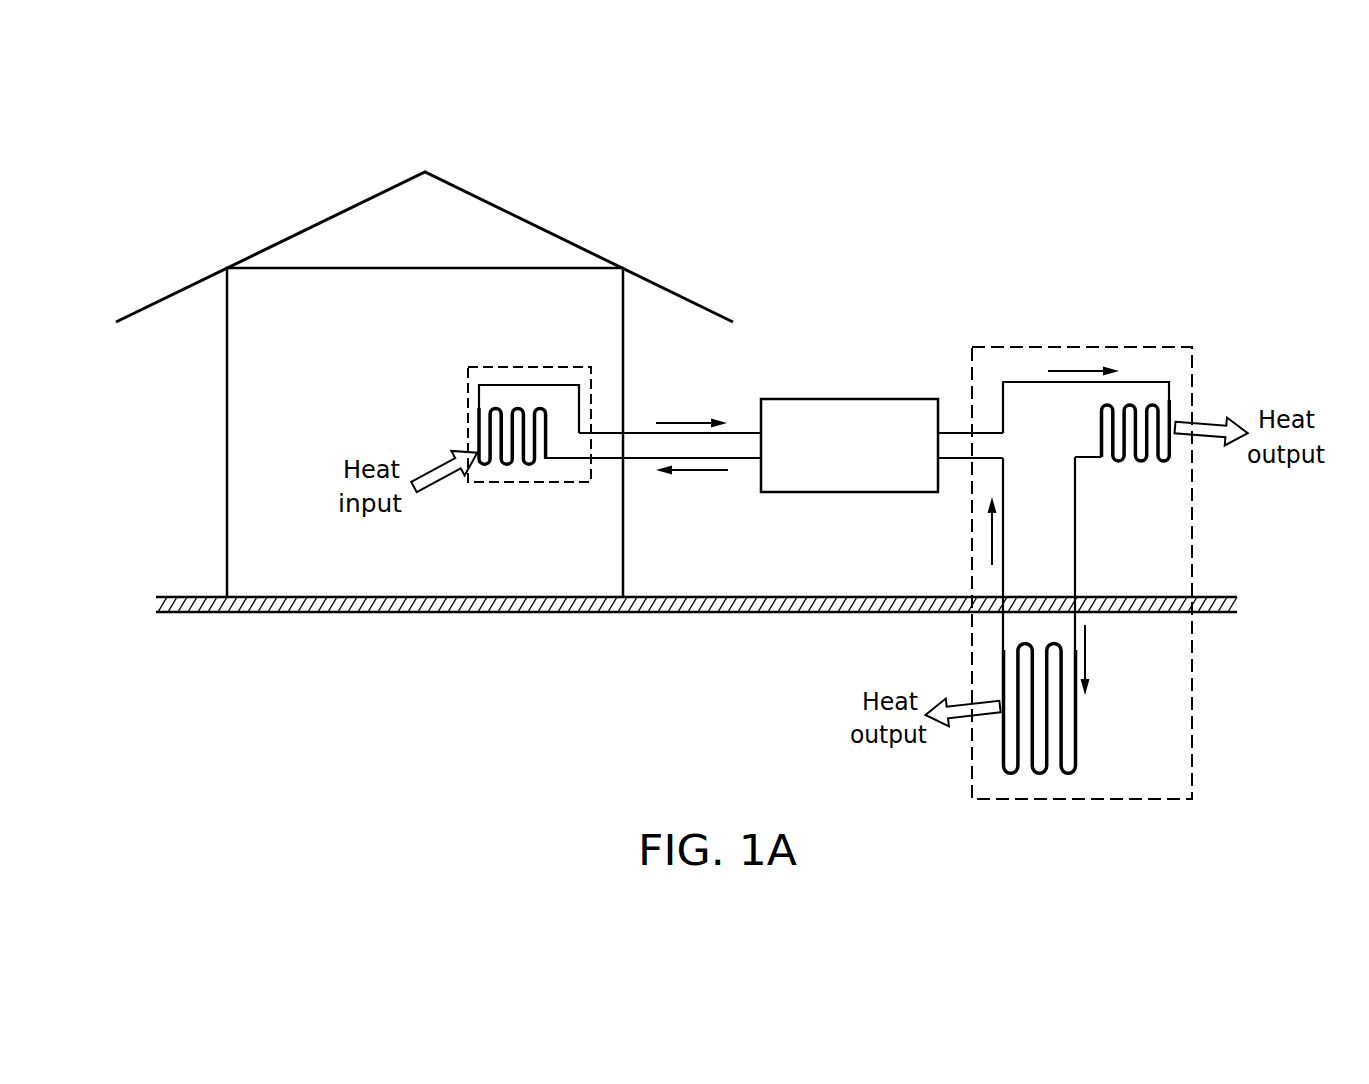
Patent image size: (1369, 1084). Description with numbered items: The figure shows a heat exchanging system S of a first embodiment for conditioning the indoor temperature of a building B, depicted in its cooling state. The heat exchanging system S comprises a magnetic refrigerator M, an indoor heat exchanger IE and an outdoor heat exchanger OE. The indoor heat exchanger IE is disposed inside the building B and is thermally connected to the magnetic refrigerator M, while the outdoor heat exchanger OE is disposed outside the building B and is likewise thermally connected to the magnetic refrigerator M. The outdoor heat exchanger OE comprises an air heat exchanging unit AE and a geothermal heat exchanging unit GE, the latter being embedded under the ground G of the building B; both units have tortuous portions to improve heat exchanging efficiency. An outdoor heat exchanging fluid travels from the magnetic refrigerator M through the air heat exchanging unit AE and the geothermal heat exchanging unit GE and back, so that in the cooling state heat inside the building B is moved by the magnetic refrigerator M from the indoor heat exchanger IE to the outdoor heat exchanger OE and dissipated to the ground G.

The building B is at (288, 220).
The indoor heat exchanger IE is at (527, 367).
The heat exchanging system S is at (903, 377).
The magnetic refrigerator M is at (850, 493).
The outdoor heat exchanger OE is at (1085, 344).
The air heat exchanging unit AE is at (1120, 463).
The geothermal heat exchanging unit GE is at (1077, 728).
The ground G is at (167, 738).